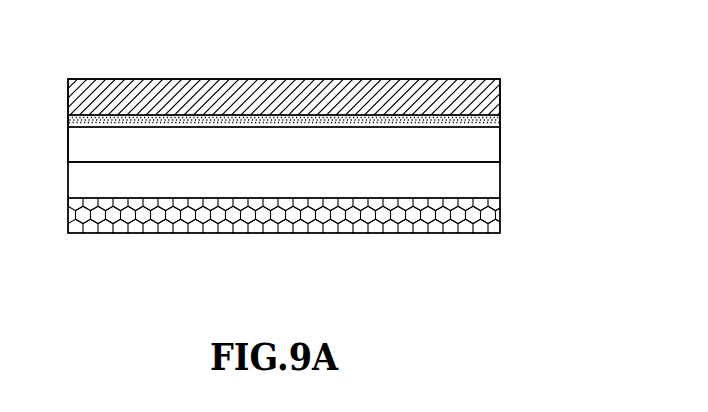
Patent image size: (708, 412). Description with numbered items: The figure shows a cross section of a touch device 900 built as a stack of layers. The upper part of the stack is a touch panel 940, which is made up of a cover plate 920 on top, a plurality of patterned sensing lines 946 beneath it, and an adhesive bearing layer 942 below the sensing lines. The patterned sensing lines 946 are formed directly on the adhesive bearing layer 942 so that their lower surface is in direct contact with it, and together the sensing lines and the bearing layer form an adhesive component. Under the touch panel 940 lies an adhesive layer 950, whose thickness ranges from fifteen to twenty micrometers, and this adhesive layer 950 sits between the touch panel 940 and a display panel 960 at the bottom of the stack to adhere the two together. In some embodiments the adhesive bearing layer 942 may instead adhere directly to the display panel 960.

The touch device 900 is at (48, 48).
The cover plate 920 is at (500, 94).
The touch panel 940 is at (602, 75).
The patterned sensing lines 946 is at (500, 119).
The adhesive bearing layer 942 is at (485, 147).
The adhesive layer 950 is at (485, 178).
The display panel 960 is at (500, 219).